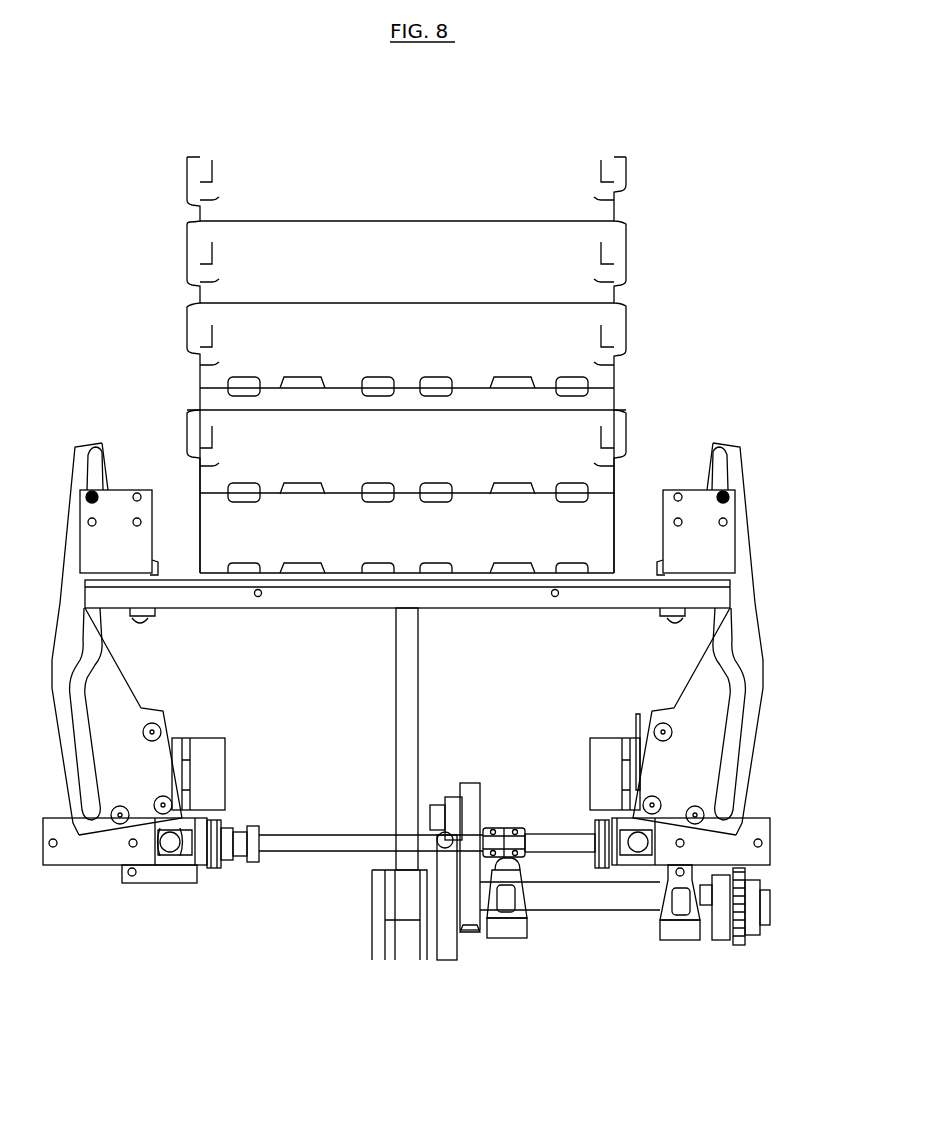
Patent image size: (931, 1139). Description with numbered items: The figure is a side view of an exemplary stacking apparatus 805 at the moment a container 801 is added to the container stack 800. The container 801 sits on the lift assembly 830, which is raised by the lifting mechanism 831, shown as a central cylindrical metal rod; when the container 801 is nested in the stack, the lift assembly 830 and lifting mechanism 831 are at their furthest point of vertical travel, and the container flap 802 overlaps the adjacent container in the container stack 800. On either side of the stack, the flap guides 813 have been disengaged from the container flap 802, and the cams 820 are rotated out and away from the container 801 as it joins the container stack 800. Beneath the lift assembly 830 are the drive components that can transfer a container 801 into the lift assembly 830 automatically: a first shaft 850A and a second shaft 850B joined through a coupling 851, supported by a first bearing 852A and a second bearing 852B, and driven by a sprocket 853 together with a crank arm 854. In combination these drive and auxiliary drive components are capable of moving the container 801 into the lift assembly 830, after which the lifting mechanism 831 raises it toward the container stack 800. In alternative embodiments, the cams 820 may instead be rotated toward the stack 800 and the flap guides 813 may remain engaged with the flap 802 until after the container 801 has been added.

The container stack 800 is at (187, 157).
The container 801 is at (472, 548).
The container flap 802 is at (347, 447).
The stacking apparatus 805 is at (733, 411).
The flap guides 813 is at (152, 572).
The cams 820 is at (750, 624).
The lift assembly 830 is at (597, 612).
The lifting mechanism 831 is at (418, 736).
The shaft 850A is at (592, 912).
The shaft 850B is at (300, 860).
The coupling 851 is at (525, 826).
The bearing 852A is at (505, 940).
The bearing 852B is at (680, 942).
The sprocket 853 is at (745, 940).
The crank arm 854 is at (470, 932).